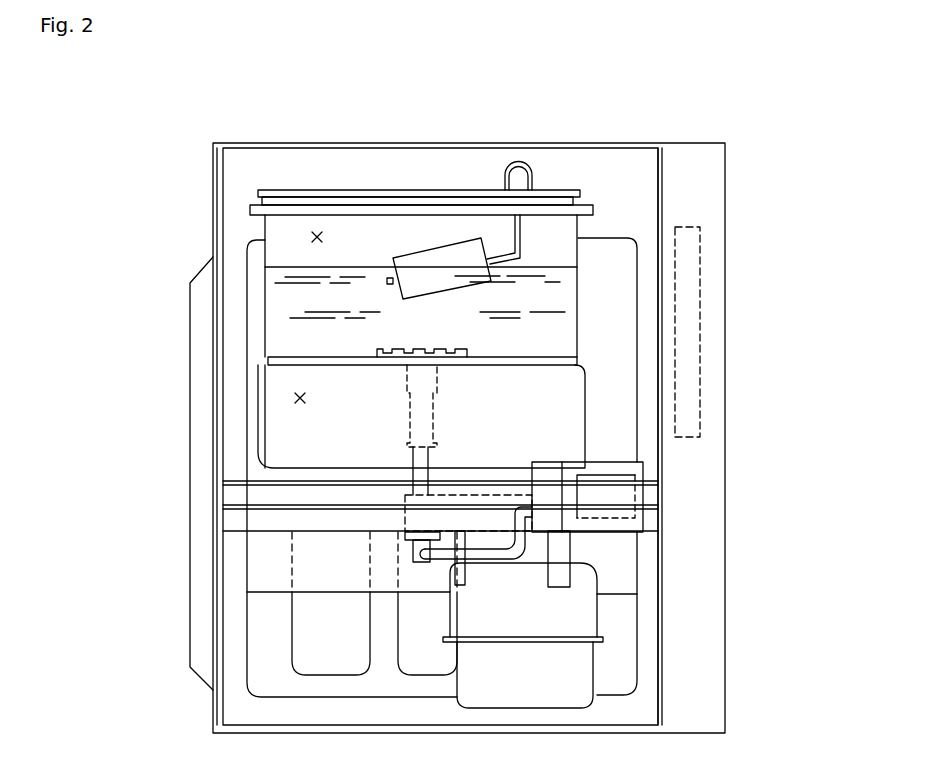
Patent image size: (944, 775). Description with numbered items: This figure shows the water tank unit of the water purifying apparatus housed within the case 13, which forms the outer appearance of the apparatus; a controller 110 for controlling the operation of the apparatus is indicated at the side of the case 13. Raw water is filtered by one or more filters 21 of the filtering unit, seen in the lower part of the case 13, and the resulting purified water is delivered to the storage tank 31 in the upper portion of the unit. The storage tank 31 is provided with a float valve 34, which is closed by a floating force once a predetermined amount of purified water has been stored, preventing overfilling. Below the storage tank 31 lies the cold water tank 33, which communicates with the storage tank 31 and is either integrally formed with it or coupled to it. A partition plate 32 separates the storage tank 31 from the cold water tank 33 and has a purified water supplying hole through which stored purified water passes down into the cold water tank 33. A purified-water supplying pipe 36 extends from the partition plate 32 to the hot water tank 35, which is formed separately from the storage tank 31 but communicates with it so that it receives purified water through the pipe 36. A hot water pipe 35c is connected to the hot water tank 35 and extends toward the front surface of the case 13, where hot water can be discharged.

The case 13 is at (716, 180).
The controller 110 is at (697, 323).
The storage tank 31 is at (317, 230).
The float valve 34 is at (427, 260).
The partition plate 32 is at (292, 365).
The cold water tank 33 is at (293, 397).
The purified-water supplying pipe 36 is at (417, 428).
The hot water tank 35 is at (577, 613).
The hot water pipe 35c is at (543, 540).
The filter 21 is at (300, 632).